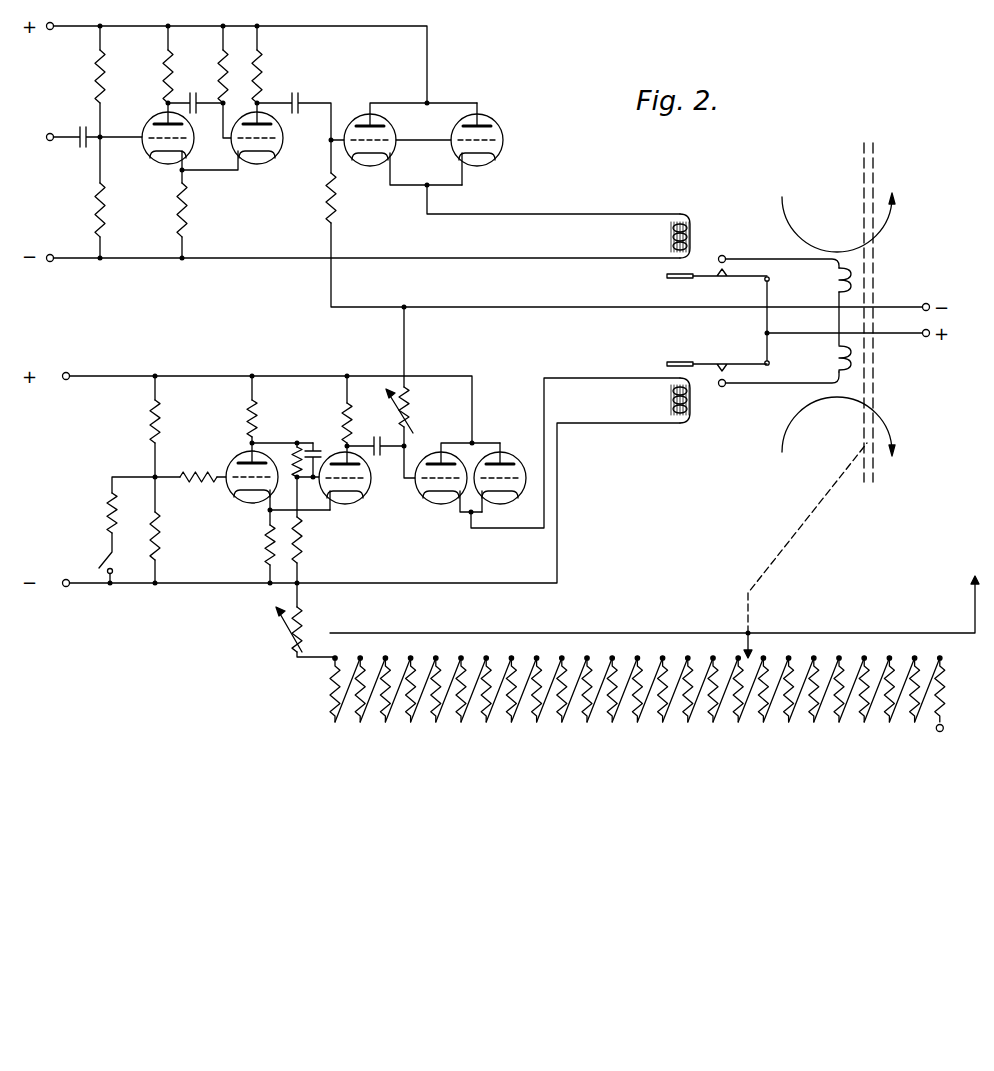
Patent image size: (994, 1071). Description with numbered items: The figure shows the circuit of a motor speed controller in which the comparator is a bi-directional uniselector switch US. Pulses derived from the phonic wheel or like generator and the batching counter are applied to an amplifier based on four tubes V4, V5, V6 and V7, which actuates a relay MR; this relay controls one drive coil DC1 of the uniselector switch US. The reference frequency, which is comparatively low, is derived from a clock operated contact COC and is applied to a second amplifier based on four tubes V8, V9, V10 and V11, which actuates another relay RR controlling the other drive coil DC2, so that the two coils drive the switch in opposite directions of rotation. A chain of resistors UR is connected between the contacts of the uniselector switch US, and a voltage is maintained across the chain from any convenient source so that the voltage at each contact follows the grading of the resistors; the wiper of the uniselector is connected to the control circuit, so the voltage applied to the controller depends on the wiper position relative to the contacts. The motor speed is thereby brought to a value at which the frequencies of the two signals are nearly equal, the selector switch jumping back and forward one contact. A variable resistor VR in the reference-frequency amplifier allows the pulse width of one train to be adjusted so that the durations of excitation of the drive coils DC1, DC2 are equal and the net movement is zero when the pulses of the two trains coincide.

The tube V4 is at (153, 159).
The tube V5 is at (258, 160).
The tube V6 is at (350, 162).
The tube V7 is at (480, 162).
The tube V8 is at (237, 494).
The tube V9 is at (352, 500).
The tube V10 is at (436, 500).
The tube V11 is at (503, 500).
The variable resistor VR is at (410, 392).
The relay MR is at (698, 236).
The relay RR is at (693, 400).
The drive coil DC1 is at (846, 280).
The drive coil DC2 is at (846, 360).
The clock operated contact COC is at (100, 562).
The uniselector switch US is at (750, 624).
The chain of resistors UR is at (490, 688).